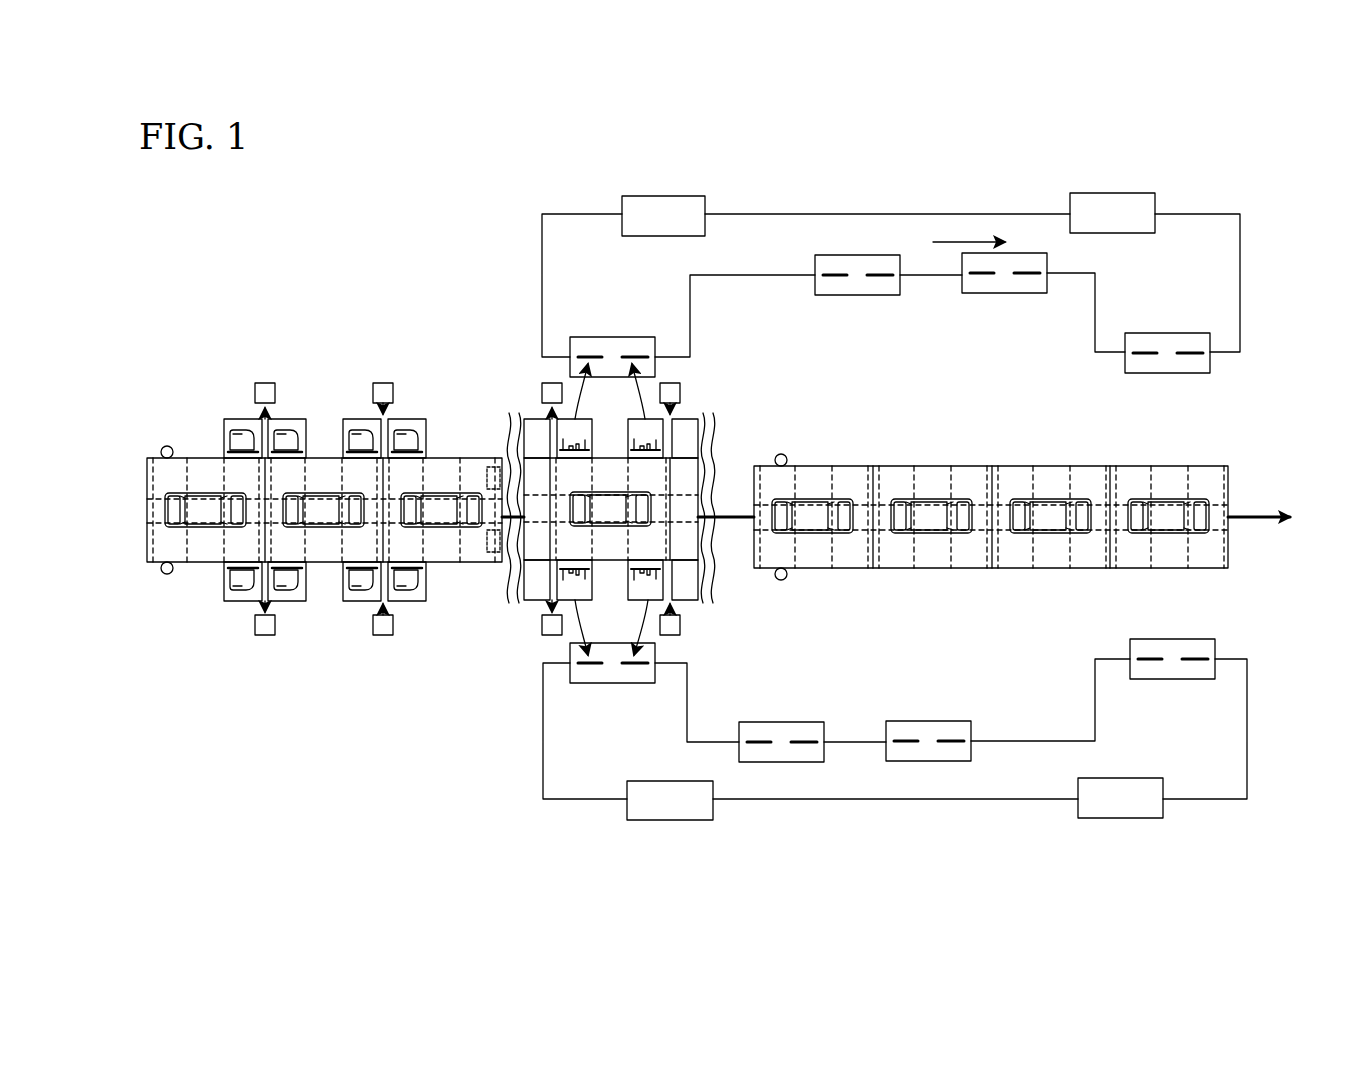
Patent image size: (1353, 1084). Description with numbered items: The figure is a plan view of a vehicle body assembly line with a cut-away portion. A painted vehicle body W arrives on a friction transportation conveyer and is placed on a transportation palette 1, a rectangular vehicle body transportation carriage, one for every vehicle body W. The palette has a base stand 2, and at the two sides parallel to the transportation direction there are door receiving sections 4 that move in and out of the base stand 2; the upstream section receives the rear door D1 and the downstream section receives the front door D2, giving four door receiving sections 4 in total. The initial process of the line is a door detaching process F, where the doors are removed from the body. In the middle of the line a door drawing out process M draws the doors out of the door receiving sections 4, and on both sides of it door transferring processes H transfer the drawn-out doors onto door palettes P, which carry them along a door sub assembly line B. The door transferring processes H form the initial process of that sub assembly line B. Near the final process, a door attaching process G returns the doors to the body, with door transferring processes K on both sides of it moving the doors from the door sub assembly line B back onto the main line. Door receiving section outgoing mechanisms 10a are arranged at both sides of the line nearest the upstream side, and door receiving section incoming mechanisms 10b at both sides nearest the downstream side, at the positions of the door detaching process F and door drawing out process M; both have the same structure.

The transportation palette 1 is at (368, 365).
The base stand 2 is at (209, 562).
The door receiving section 4 is at (242, 419).
The door receiving section outgoing mechanism 10a is at (265, 382).
The door receiving section incoming mechanism 10b is at (386, 382).
The vehicle body W is at (200, 505).
The door detaching process F is at (334, 365).
The door transferring process H is at (533, 358).
The door drawing out process M is at (504, 435).
The door sub assembly line B is at (818, 200).
The door palette P is at (667, 200).
The door transferring process K is at (1169, 322).
The door attaching process G is at (1208, 578).
The rear door D1 is at (284, 430).
The front door D2 is at (370, 430).